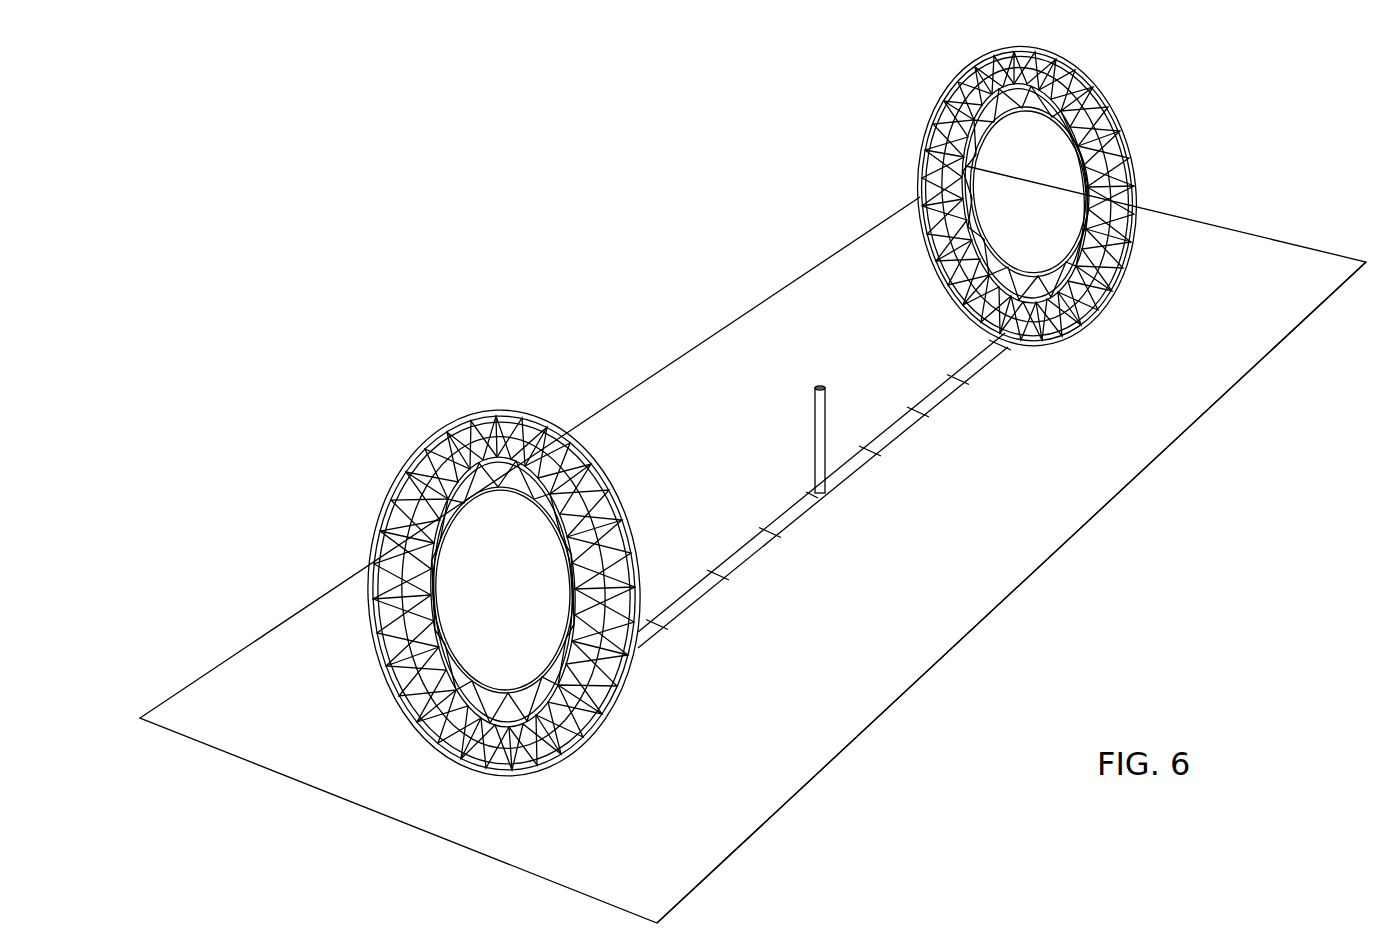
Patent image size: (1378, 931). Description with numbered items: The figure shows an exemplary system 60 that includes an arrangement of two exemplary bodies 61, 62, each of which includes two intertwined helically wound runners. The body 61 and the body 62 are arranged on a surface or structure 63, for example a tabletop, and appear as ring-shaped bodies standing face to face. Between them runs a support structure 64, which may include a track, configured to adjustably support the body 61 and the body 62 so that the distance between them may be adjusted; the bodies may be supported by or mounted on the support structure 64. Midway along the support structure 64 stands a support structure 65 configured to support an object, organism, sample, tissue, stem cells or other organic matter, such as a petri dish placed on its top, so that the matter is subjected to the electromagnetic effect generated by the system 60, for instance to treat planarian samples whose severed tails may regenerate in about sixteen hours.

The system 60 is at (416, 864).
The body 61 is at (946, 304).
The body 62 is at (374, 671).
The surface or structure 63 is at (738, 830).
The support structure 64 is at (950, 407).
The support structure 65 is at (801, 402).